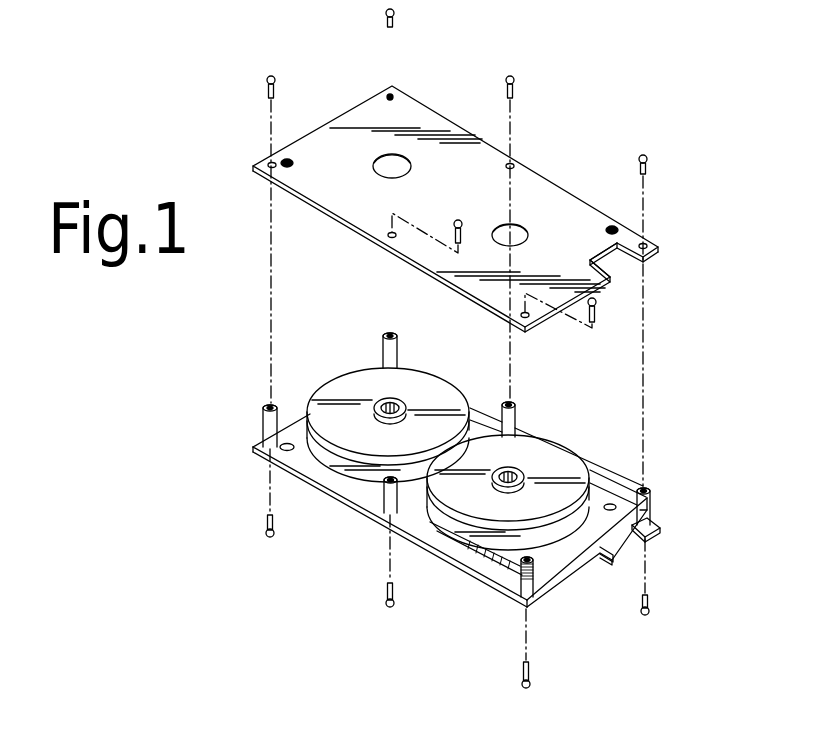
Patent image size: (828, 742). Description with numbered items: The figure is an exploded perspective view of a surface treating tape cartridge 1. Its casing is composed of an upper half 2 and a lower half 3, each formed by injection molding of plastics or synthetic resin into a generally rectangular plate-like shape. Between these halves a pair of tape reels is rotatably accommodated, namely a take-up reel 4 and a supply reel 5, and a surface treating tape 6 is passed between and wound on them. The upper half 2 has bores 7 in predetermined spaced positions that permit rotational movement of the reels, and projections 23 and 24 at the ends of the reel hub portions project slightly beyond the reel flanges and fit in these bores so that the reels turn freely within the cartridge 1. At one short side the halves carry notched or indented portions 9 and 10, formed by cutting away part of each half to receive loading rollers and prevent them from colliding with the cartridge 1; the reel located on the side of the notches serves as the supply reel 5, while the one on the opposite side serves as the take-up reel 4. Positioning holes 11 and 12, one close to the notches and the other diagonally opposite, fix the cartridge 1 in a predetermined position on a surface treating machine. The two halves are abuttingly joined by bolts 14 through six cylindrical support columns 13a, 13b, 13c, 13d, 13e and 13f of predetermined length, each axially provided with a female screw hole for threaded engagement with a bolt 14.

The surface treating tape cartridge 1 is at (673, 197).
The upper half 2 is at (523, 177).
The lower half 3 is at (365, 493).
The take-up reel 4 is at (330, 398).
The supply reel 5 is at (455, 508).
The surface treating tape 6 is at (560, 565).
The bores 7 is at (392, 153).
The notched portion 9 is at (623, 256).
The notched portion 10 is at (601, 549).
The positioning holes 11 is at (288, 158).
The positioning holes 12 is at (284, 450).
The support column 13a is at (520, 605).
The support column 13b is at (651, 492).
The support column 13c is at (513, 417).
The support column 13d is at (391, 495).
The support column 13e is at (263, 425).
The support column 13f is at (383, 348).
The bolt 14 is at (511, 76).
The projection 23 is at (405, 413).
The projection 24 is at (537, 480).